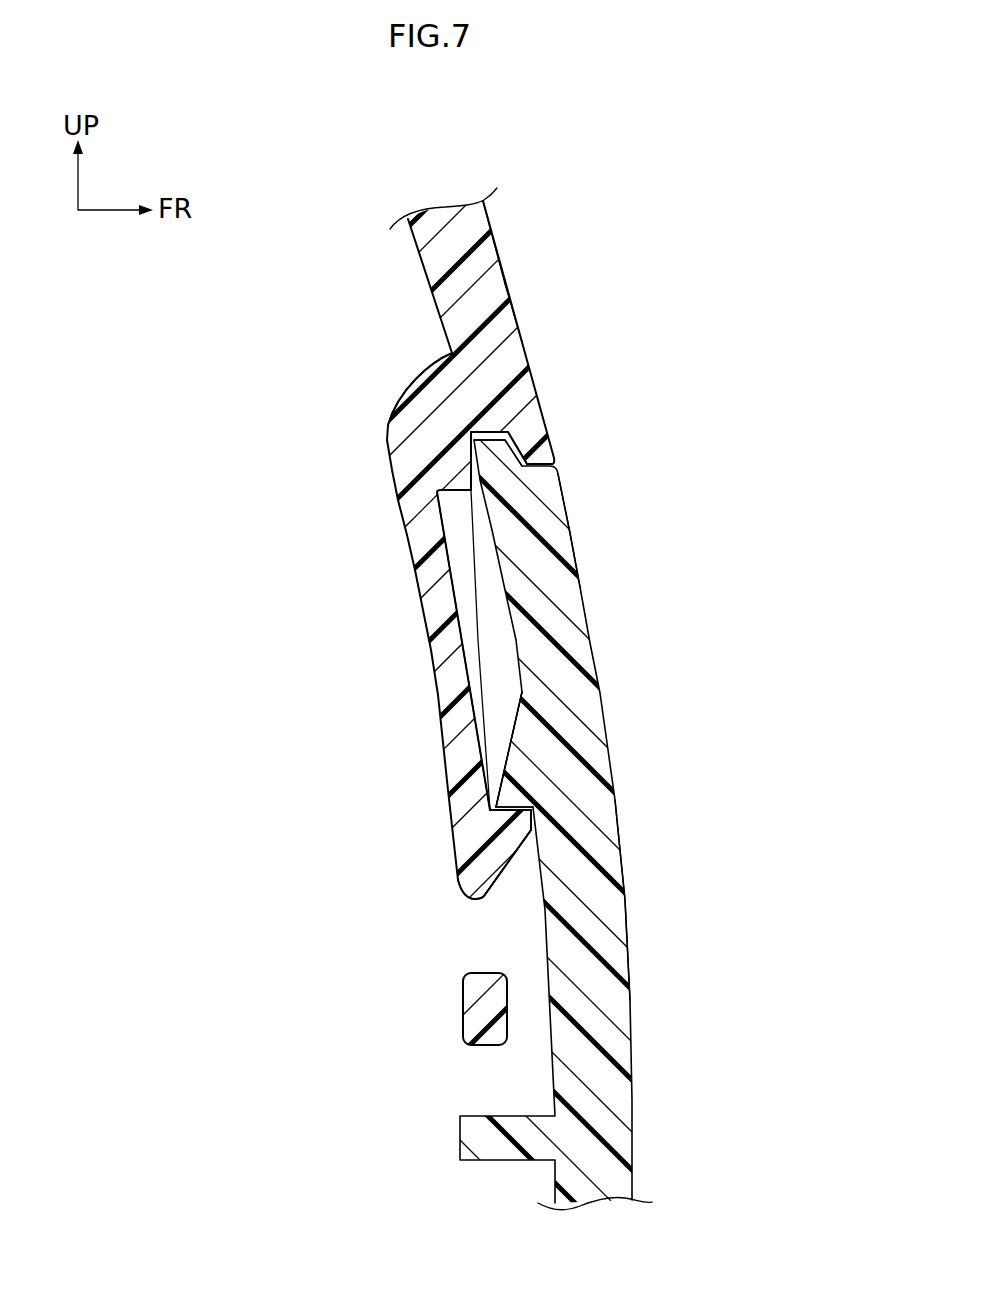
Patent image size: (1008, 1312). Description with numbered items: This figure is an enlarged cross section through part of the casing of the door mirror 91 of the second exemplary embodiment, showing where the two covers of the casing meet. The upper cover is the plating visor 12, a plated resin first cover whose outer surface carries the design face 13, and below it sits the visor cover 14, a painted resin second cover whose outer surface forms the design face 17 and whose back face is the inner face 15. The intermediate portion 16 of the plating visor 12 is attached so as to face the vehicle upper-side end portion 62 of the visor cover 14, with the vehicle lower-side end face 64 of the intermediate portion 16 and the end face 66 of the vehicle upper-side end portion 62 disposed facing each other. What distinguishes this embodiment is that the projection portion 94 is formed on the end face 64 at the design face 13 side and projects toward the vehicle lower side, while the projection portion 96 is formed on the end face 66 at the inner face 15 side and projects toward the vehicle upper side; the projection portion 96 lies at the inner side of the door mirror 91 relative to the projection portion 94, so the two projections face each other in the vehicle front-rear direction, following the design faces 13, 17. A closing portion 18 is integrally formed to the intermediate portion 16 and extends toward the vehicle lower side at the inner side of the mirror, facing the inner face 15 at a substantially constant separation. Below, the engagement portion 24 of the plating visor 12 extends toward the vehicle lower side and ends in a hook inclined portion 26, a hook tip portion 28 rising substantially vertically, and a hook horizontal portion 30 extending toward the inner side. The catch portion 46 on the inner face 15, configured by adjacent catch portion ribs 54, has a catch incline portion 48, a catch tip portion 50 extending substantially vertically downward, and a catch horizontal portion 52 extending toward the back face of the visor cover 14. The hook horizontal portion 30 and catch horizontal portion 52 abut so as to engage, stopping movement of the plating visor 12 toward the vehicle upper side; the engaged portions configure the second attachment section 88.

The plating visor 12 is at (505, 283).
The design face 13 is at (522, 342).
The visor cover 14 is at (596, 651).
The inner face 15 is at (553, 1063).
The intermediate portion 16 is at (538, 399).
The design face 17 is at (626, 925).
The closing portion 18 is at (470, 428).
The engagement portion 24 is at (455, 875).
The hook inclined portion 26 is at (500, 870).
The hook tip portion 28 is at (533, 830).
The hook horizontal portion 30 is at (493, 775).
The catch portion 46 is at (498, 745).
The catch incline portion 48 is at (496, 755).
The catch tip portion 50 is at (488, 812).
The catch horizontal portion 52 is at (535, 845).
The catch portion rib 54 is at (523, 763).
The vehicle upper-side end portion 62 is at (574, 541).
The end face 64 is at (518, 460).
The end face 66 is at (527, 445).
The second attachment section 88 is at (412, 768).
The door mirror 91 is at (760, 329).
The projection portion 94 is at (543, 421).
The projection portion 96 is at (508, 431).